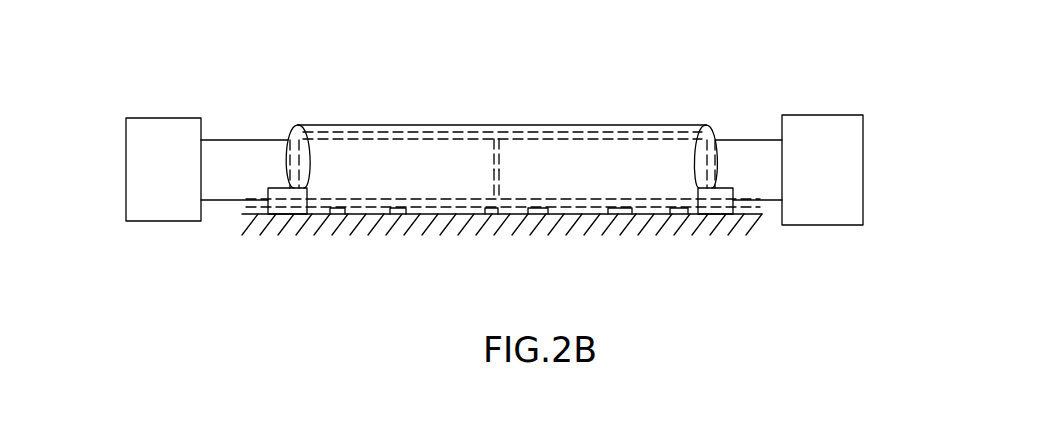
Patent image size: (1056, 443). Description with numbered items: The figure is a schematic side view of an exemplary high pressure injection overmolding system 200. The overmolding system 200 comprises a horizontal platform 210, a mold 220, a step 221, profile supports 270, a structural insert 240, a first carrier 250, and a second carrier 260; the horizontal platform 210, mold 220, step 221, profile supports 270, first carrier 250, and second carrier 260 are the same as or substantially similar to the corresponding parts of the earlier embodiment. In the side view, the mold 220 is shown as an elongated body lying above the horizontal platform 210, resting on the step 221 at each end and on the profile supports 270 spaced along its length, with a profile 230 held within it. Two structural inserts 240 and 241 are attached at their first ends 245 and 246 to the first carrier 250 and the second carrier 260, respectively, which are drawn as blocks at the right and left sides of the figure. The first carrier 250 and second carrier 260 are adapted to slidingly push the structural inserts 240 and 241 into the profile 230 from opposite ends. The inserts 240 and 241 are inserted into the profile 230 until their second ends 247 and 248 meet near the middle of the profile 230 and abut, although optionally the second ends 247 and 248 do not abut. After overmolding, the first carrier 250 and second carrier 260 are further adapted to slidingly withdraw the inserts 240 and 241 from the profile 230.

The high pressure injection overmolding system 200 is at (875, 58).
The horizontal platform 210 is at (742, 215).
The mold 220 is at (513, 125).
The step 221 is at (268, 195).
The profile 230 is at (588, 128).
The structural insert 240 is at (745, 139).
The structural insert 241 is at (250, 139).
The first end 245 is at (782, 172).
The first end 246 is at (201, 172).
The second end 247 is at (492, 164).
The second end 248 is at (500, 178).
The first carrier 250 is at (863, 168).
The second carrier 260 is at (126, 166).
The profile supports 270 is at (343, 215).